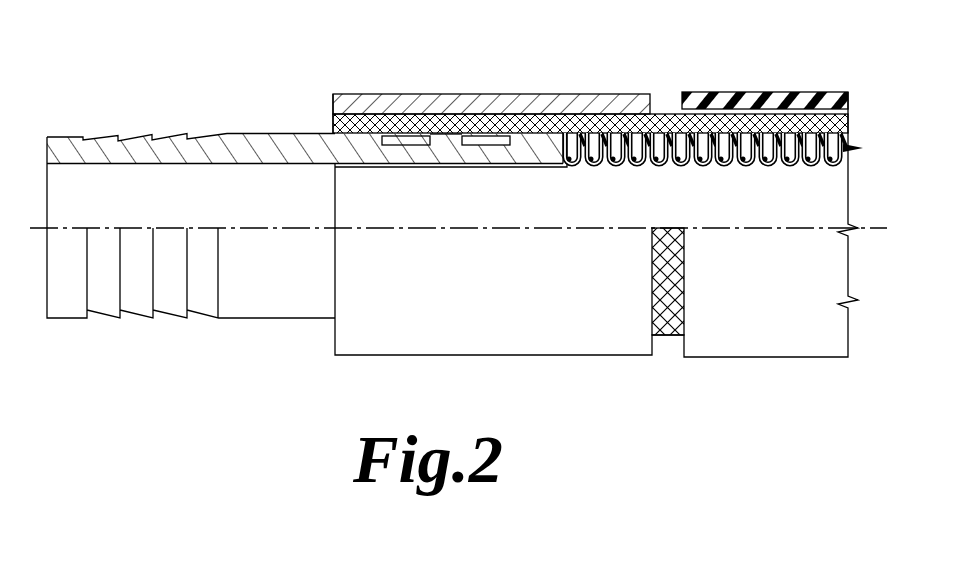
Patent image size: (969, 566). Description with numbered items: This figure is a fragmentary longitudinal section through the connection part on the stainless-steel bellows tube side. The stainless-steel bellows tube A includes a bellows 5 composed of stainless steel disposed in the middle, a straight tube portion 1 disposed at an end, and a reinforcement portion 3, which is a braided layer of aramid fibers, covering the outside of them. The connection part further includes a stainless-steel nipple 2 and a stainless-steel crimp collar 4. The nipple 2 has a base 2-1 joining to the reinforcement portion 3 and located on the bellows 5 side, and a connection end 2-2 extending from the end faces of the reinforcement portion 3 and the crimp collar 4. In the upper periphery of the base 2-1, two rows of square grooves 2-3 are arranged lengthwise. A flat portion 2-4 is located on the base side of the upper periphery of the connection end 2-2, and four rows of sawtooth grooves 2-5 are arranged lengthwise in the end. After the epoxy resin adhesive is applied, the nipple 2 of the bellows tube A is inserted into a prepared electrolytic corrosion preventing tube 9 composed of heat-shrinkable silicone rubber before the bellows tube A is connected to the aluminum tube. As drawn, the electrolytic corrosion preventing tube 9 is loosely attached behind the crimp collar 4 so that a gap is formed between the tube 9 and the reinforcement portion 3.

The straight tube portion 1 is at (502, 139).
The stainless-steel nipple 2 is at (250, 164).
The base 2-1 is at (445, 137).
The connection end 2-2 is at (232, 150).
The square grooves 2-3 is at (507, 138).
The flat portion 2-4 is at (243, 134).
The sawtooth grooves 2-5 is at (140, 138).
The reinforcement portion 3 is at (333, 131).
The stainless-steel crimp collar 4 is at (487, 95).
The bellows 5 is at (713, 164).
The electrolytic corrosion preventing tube 9 is at (772, 92).
The stainless-steel bellows tube A is at (682, 72).